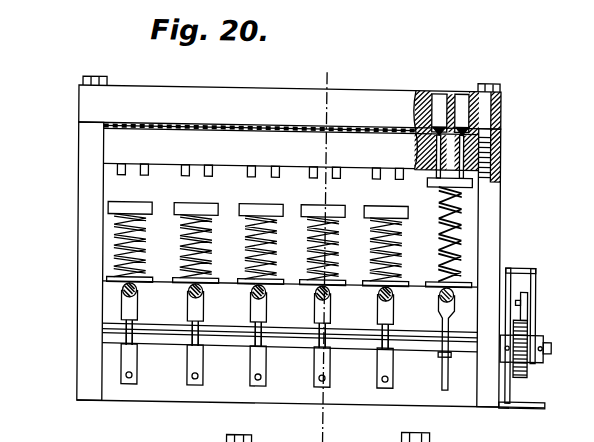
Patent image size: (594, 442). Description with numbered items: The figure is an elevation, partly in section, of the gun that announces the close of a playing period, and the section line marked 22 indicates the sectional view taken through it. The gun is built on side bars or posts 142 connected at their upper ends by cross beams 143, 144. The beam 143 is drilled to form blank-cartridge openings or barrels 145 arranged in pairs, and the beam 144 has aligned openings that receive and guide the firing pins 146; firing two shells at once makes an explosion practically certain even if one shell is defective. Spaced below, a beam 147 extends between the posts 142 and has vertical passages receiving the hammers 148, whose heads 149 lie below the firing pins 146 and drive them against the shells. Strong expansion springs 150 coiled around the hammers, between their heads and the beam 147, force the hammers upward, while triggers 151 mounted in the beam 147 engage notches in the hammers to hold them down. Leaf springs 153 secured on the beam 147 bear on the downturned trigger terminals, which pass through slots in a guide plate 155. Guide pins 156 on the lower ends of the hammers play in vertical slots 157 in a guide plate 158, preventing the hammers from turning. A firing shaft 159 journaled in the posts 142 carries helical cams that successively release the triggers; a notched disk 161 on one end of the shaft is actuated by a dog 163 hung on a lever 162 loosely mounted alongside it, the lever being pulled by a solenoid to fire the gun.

The posts 142 is at (79, 205).
The cross beam 143 is at (372, 90).
The cross beam 144 is at (232, 163).
The barrels 145 is at (462, 88).
The firing pins 146 is at (432, 142).
The beam 147 is at (295, 278).
The hammers 148 is at (441, 243).
The heads 149 is at (301, 202).
The expansion springs 150 is at (147, 240).
The triggers 151 is at (252, 340).
The leaf springs 153 is at (268, 315).
The guide plate 155 is at (172, 326).
The guide pins 156 is at (192, 375).
The vertical slots 157 is at (446, 367).
The guide plate 158 is at (152, 396).
The firing shaft 159 is at (352, 343).
The notched disk 161 is at (520, 366).
The lever 162 is at (537, 304).
The dog 163 is at (523, 285).
The section line 22 is at (337, 73).